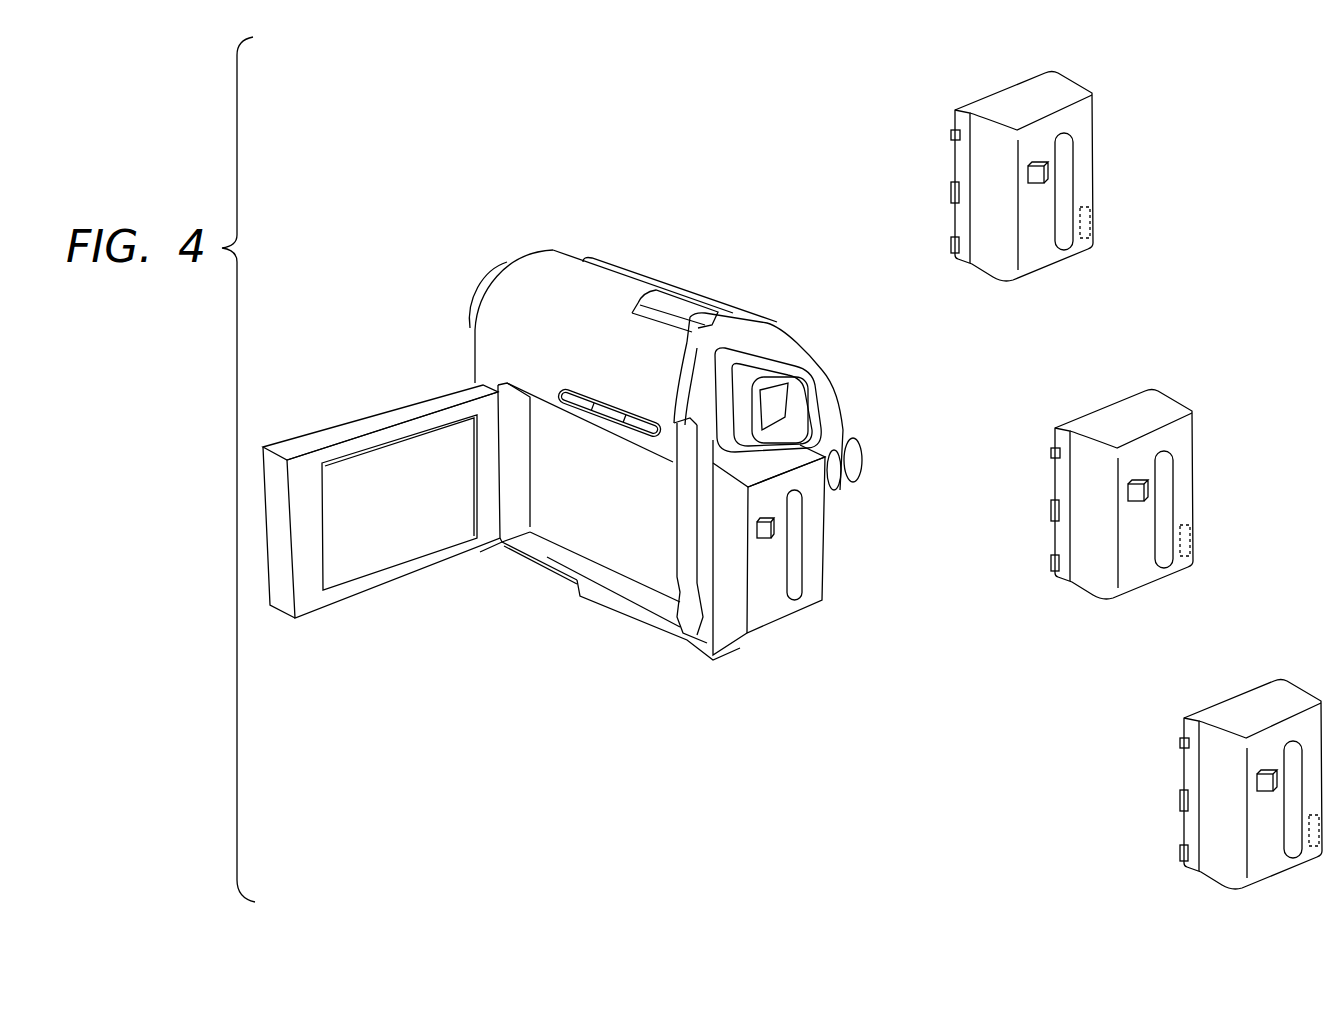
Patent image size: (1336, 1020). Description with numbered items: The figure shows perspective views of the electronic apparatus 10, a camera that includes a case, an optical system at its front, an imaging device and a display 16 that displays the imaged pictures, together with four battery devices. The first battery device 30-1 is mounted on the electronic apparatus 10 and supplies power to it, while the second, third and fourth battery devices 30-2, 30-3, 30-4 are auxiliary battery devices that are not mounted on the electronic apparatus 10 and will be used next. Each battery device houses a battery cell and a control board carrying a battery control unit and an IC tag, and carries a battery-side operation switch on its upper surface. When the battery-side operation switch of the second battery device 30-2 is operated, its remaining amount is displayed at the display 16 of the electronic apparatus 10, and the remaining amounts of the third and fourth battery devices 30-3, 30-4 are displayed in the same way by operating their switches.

The electronic apparatus 10 is at (640, 256).
The display 16 is at (383, 412).
The first battery device 30-1 is at (814, 589).
The second battery device 30-2 is at (954, 94).
The third battery device 30-3 is at (1096, 481).
The fourth battery device 30-4 is at (1222, 775).